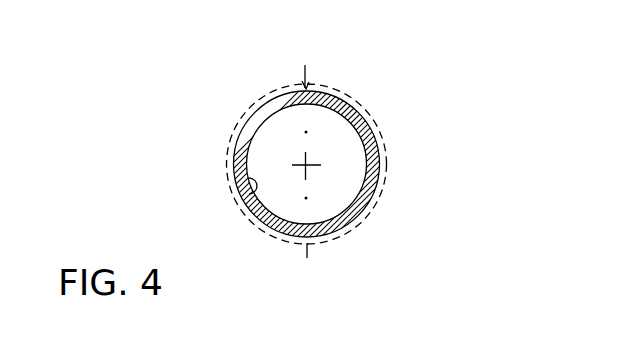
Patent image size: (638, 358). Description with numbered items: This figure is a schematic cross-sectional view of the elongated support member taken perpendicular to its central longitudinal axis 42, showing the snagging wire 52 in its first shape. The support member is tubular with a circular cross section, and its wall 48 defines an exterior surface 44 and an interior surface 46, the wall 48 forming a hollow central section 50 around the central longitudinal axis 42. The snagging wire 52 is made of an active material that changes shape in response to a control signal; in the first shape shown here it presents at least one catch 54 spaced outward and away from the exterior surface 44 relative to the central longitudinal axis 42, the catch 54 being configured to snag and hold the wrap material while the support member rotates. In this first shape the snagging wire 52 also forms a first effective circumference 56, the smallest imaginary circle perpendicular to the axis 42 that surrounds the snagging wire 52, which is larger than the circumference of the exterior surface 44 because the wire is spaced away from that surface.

The central longitudinal axis 42 is at (306, 165).
The exterior surface 44 is at (235, 148).
The interior surface 46 is at (248, 207).
The wall 48 is at (330, 227).
The hollow central section 50 is at (330, 187).
The snagging wire 52 is at (306, 88).
The catch 54 is at (305, 72).
The first effective circumference 56 is at (370, 111).